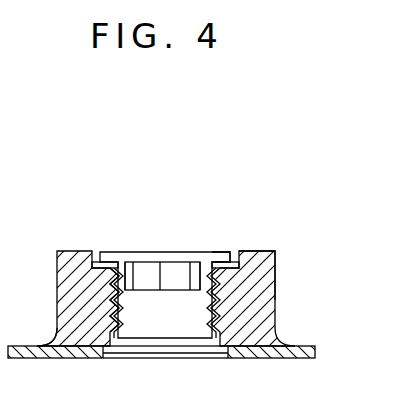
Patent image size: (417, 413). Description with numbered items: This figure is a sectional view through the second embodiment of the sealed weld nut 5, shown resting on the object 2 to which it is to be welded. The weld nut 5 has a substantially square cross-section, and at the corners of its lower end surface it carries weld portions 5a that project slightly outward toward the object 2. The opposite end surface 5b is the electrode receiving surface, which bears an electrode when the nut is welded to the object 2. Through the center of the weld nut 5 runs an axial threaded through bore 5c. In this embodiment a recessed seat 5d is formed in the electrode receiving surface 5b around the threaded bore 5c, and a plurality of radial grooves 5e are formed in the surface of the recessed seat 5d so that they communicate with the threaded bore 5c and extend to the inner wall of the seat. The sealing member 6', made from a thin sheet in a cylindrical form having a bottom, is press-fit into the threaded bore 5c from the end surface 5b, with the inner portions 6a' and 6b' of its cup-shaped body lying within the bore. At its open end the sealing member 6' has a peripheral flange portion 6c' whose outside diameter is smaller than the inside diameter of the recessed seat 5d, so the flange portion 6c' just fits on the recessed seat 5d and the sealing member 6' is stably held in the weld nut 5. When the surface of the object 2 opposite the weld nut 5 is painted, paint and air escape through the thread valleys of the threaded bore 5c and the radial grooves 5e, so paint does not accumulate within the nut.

The object 2 is at (310, 345).
The sealed weld nut 5 is at (277, 285).
The weld portions 5a is at (47, 344).
The end surface 5b is at (260, 251).
The threaded through bore 5c is at (108, 310).
The recessed seat 5d is at (98, 266).
The radial grooves 5e is at (233, 251).
The sealing member 6' is at (165, 260).
The socket wall of plug 6a' is at (133, 249).
The socket wall of plug 6b' is at (197, 249).
The flange portion 6c' is at (228, 224).